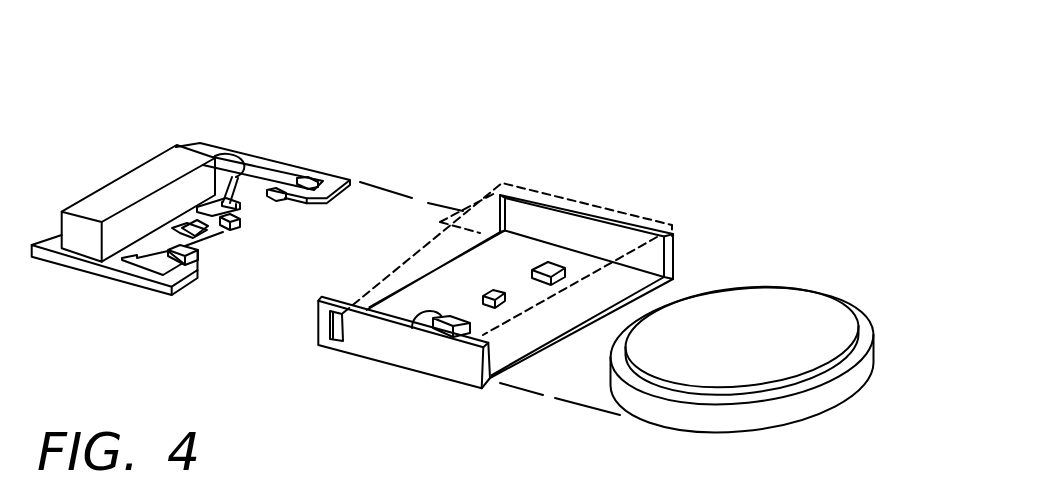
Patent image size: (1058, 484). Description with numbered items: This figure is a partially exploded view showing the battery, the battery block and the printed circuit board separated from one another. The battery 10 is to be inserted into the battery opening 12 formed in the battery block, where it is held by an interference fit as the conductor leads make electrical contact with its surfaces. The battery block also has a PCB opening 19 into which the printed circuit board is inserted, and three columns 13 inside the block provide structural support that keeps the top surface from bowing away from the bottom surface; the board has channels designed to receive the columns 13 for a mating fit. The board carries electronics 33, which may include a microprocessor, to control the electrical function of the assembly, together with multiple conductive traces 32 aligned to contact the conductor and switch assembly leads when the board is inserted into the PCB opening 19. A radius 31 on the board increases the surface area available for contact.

The battery 10 is at (770, 292).
The battery opening 12 is at (477, 6).
The column 13 is at (548, 263).
The PCB opening 19 is at (425, 287).
The radius 31 is at (228, 258).
The conductive traces 32 is at (306, 189).
The electronics 33 is at (272, 158).